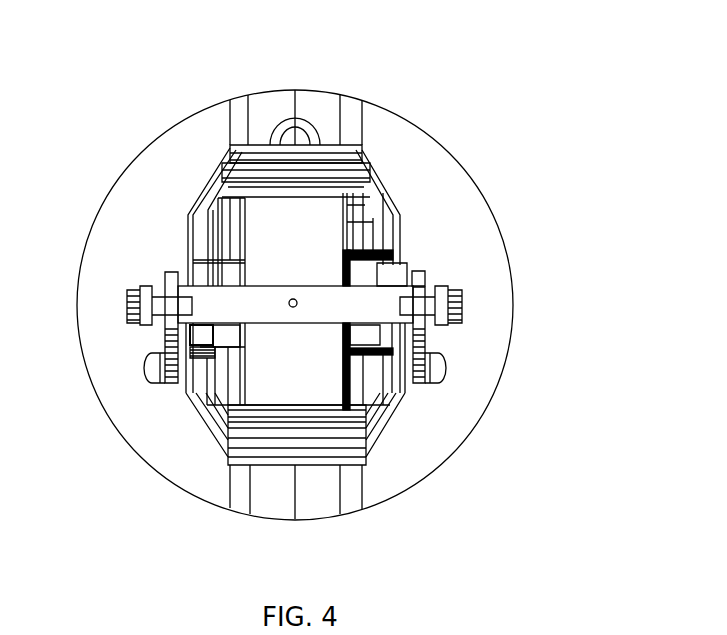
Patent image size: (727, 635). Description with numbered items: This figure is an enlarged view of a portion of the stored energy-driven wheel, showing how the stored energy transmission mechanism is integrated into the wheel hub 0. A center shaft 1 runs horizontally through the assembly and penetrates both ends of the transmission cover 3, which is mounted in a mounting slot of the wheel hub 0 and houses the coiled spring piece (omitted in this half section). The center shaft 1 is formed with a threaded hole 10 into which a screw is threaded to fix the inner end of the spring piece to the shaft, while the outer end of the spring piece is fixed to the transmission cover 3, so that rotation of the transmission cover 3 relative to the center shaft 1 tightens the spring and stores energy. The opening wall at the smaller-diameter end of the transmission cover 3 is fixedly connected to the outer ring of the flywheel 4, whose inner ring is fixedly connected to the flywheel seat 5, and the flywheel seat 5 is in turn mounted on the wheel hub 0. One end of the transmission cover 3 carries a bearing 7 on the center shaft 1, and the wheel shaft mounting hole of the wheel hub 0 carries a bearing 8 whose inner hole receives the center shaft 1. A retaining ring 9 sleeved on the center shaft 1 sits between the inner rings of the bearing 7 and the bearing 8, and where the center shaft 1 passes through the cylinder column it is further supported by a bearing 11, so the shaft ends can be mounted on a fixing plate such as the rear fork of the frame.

The wheel hub 0 is at (250, 157).
The center shaft 1 is at (262, 303).
The transmission cover 3 is at (308, 190).
The flywheel 4 is at (363, 235).
The flywheel seat 5 is at (398, 220).
The bearing 7 is at (226, 278).
The bearing 8 is at (200, 278).
The retaining ring 9 is at (212, 329).
The threaded hole 10 is at (291, 300).
The bearing 11 is at (387, 273).